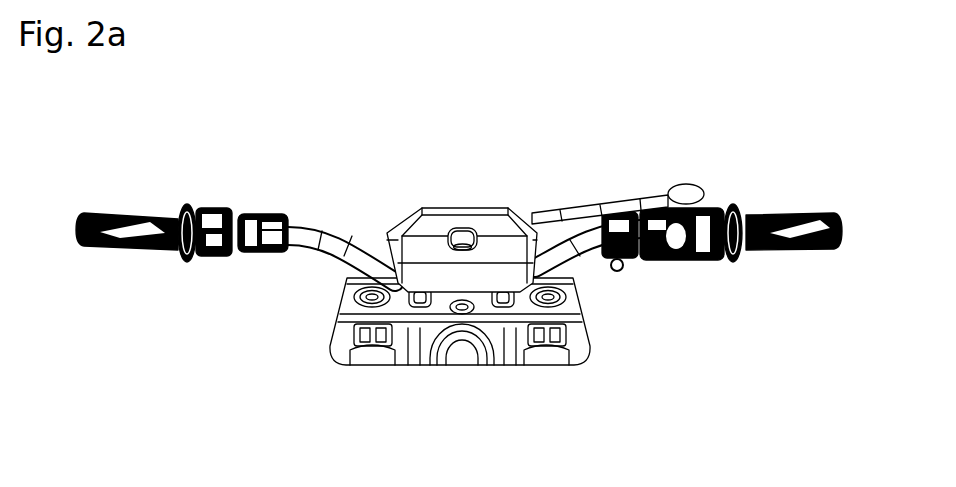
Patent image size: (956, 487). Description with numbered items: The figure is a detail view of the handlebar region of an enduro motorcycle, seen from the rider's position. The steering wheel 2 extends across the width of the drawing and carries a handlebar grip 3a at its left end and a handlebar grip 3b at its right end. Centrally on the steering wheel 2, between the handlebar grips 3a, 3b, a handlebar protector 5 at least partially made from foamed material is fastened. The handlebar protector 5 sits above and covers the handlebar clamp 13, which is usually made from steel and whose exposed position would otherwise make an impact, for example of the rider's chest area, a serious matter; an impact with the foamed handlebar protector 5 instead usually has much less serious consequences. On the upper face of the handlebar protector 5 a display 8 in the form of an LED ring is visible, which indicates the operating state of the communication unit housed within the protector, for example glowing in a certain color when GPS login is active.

The steering wheel 2 is at (350, 222).
The handlebar grip 3a is at (155, 250).
The handlebar grip 3b is at (774, 252).
The handlebar protector 5 is at (489, 222).
The display 8 is at (458, 252).
The handlebar clamp 13 is at (527, 324).